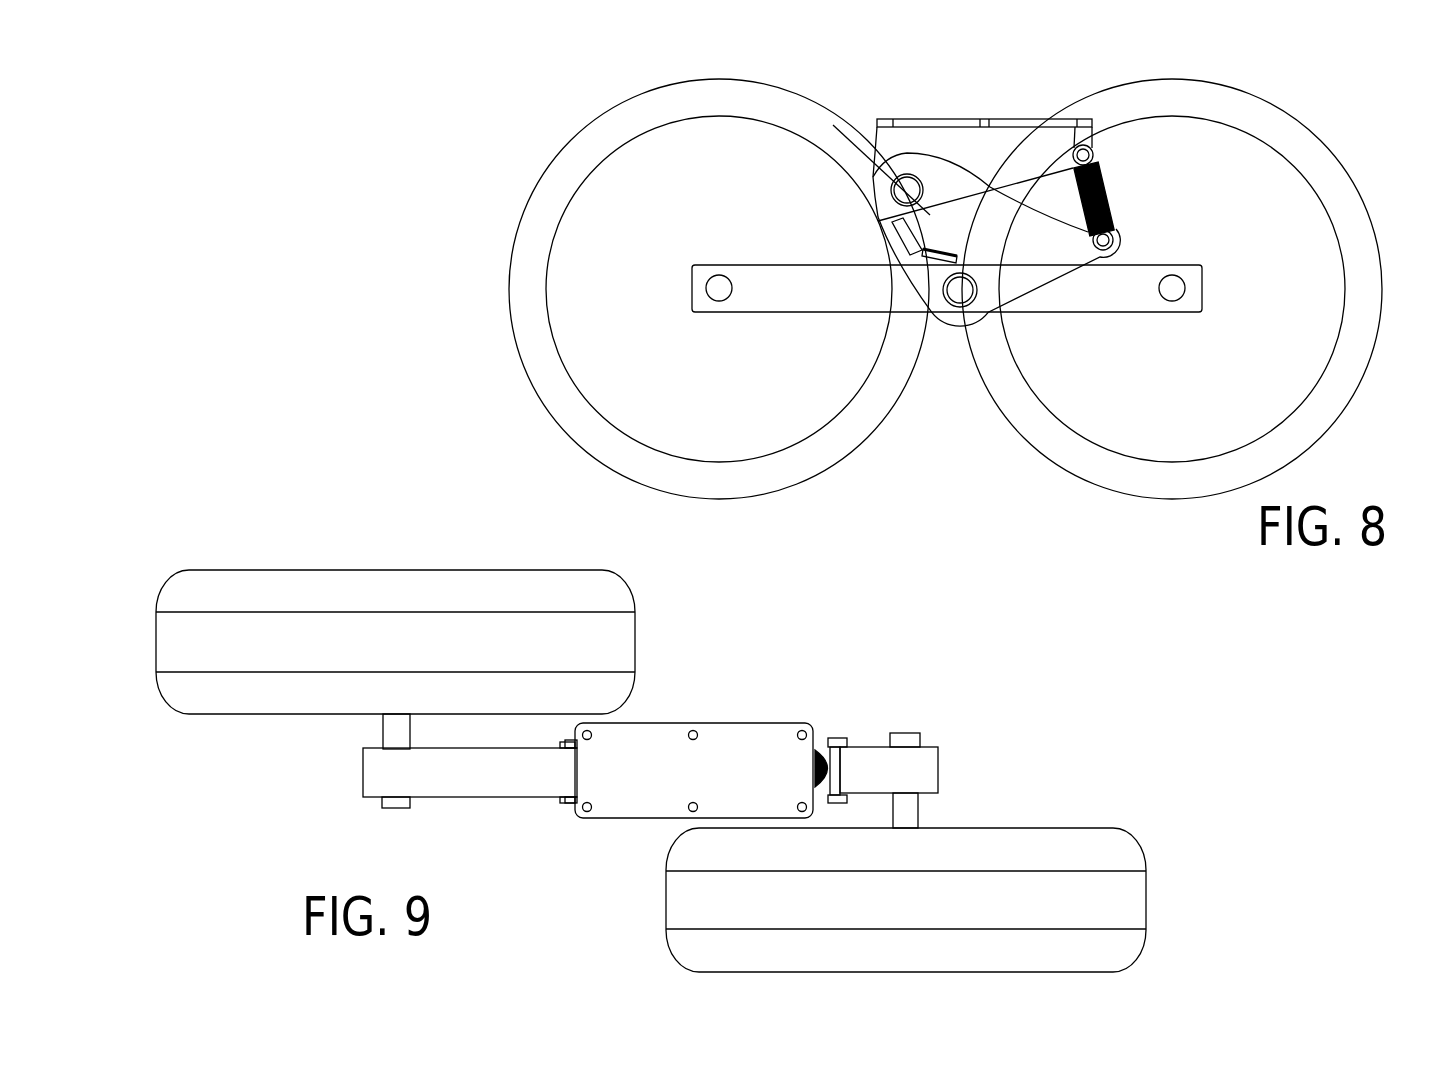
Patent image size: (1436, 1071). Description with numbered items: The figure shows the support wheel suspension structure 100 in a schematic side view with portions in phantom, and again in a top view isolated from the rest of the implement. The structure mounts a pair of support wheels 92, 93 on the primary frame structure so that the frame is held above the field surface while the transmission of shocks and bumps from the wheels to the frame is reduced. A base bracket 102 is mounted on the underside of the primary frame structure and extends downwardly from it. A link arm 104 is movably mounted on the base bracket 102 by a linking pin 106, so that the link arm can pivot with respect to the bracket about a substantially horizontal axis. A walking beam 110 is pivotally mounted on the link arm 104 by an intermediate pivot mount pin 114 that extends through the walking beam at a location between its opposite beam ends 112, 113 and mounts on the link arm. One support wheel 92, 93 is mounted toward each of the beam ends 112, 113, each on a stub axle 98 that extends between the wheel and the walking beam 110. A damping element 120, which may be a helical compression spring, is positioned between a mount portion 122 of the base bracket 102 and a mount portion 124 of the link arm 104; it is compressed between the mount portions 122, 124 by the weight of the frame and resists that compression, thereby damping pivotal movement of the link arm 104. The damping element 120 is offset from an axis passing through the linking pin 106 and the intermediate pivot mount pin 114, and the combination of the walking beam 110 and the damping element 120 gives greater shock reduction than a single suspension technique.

In FIG. 8, the support wheel 92 is at (544, 406).
In FIG. 9, the support wheel 92 is at (638, 614).
In FIG. 8, the support wheel 93 is at (1344, 407).
In FIG. 9, the support wheel 93 is at (1148, 854).
In FIG. 9, the stub axle 98 is at (383, 722).
In FIG. 8, the support wheel suspension structure 100 is at (980, 96).
In FIG. 9, the support wheel suspension structure 100 is at (955, 667).
In FIG. 8, the base bracket 102 is at (944, 119).
In FIG. 9, the base bracket 102 is at (725, 738).
In FIG. 8, the link arm 104 is at (1040, 300).
In FIG. 8, the linking pin 106 is at (910, 175).
In FIG. 9, the walking beam 110 is at (503, 778).
In FIG. 9, the beam end 112 is at (363, 775).
In FIG. 9, the beam end 113 is at (940, 770).
In FIG. 8, the intermediate pivot mount pin 114 is at (978, 318).
In FIG. 8, the damping element 120 is at (1106, 192).
In FIG. 9, the damping element 120 is at (838, 755).
In FIG. 8, the mount portion of the base bracket 122 is at (1092, 150).
In FIG. 8, the mount portion of the link arm 124 is at (1113, 237).